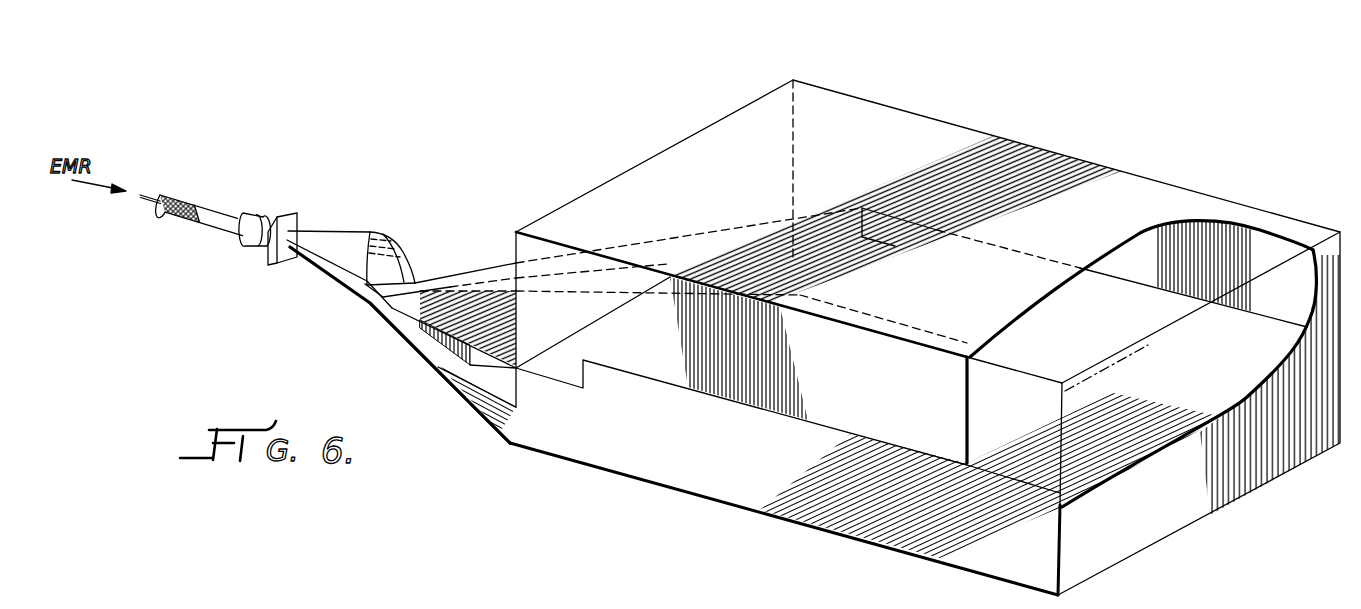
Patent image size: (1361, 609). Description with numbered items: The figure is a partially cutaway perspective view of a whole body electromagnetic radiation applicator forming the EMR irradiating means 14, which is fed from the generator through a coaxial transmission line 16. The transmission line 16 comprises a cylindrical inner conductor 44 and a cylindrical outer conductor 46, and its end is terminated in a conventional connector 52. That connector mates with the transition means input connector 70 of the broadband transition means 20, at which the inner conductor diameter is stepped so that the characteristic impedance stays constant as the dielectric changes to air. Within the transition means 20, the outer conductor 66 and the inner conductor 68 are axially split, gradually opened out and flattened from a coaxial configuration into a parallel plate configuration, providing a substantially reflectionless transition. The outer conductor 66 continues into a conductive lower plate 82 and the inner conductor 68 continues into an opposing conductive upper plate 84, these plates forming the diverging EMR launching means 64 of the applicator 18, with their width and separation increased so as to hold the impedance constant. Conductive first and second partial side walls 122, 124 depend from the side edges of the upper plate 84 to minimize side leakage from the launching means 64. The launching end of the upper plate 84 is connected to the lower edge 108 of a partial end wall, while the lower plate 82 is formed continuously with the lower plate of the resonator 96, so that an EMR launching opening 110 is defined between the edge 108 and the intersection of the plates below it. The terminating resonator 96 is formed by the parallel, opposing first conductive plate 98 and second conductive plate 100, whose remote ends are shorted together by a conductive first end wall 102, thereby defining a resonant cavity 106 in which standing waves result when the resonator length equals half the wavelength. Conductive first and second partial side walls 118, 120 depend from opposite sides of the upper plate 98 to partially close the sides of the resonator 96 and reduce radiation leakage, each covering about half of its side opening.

The EMR irradiating means 14 is at (272, 345).
The transmission line 16 is at (193, 236).
The applicator 18 is at (893, 80).
The broadband transition means 20 is at (349, 203).
The inner conductor 44 is at (181, 197).
The outer conductor 46 is at (144, 195).
The connector 52 is at (268, 199).
The EMR launching means 64 is at (402, 363).
The outer conductor of transition means 66 is at (355, 236).
The inner conductor of transition means 68 is at (399, 258).
The transition means input connector 70 is at (311, 191).
The lower plate 82 is at (482, 395).
The upper plate 84 is at (474, 286).
The resonator 96 is at (1140, 160).
The first conductive plate 98 is at (971, 138).
The second conductive plate 100 is at (866, 545).
The first end wall 102 is at (1208, 488).
The resonant cavity 106 is at (1214, 366).
The lower edge of second end wall 108 is at (594, 328).
The launching opening 110 is at (565, 396).
The first partial side wall 118 is at (806, 412).
The second partial side wall 120 is at (1147, 278).
The first partial side wall of launching means 122 is at (456, 376).
The second partial side wall of launching means 124 is at (687, 255).